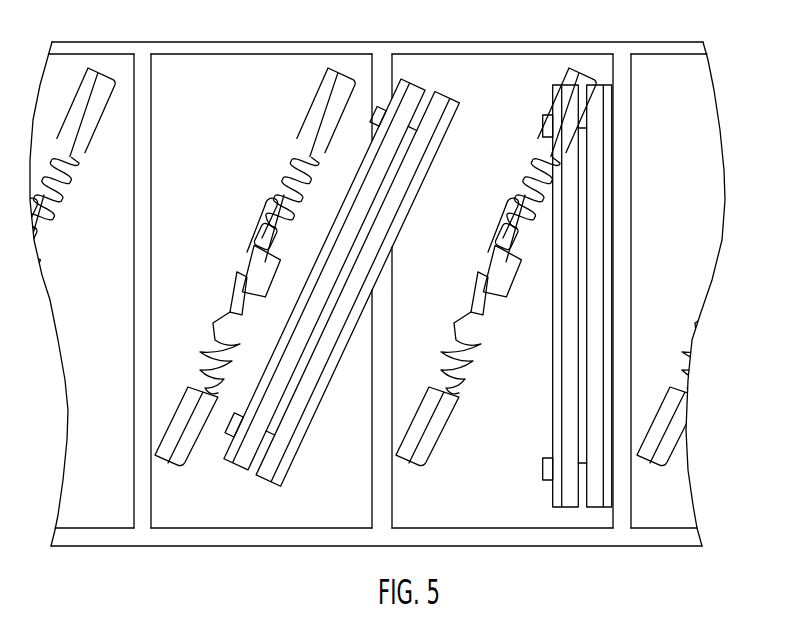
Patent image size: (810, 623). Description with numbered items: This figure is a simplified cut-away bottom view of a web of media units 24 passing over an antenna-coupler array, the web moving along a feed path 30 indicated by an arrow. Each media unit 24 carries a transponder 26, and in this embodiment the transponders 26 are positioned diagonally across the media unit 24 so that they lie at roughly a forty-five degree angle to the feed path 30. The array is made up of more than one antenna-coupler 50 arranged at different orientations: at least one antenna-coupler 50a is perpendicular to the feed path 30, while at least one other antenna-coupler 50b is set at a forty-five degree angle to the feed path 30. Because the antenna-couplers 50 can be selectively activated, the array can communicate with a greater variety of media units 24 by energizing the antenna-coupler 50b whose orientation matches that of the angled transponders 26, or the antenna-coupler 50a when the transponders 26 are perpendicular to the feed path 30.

The media unit 24 is at (540, 77).
The transponder 26 is at (340, 123).
The feed path 30 is at (78, 6).
The antenna-coupler 50 is at (503, 273).
The antenna-coupler 50a is at (598, 400).
The antenna-coupler 50b is at (248, 452).